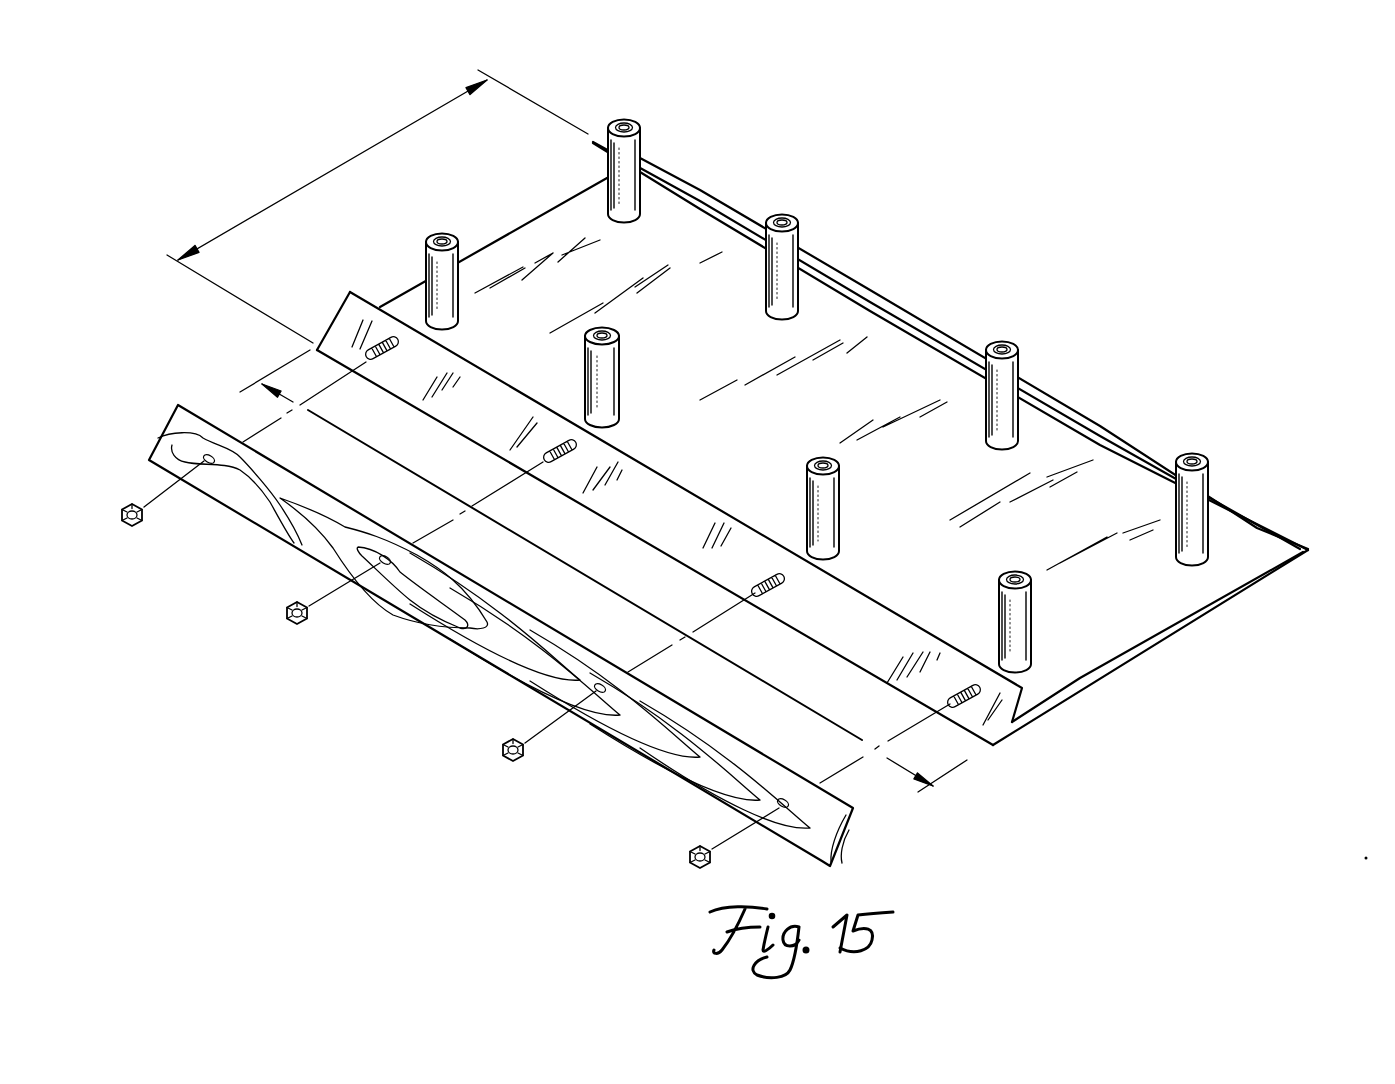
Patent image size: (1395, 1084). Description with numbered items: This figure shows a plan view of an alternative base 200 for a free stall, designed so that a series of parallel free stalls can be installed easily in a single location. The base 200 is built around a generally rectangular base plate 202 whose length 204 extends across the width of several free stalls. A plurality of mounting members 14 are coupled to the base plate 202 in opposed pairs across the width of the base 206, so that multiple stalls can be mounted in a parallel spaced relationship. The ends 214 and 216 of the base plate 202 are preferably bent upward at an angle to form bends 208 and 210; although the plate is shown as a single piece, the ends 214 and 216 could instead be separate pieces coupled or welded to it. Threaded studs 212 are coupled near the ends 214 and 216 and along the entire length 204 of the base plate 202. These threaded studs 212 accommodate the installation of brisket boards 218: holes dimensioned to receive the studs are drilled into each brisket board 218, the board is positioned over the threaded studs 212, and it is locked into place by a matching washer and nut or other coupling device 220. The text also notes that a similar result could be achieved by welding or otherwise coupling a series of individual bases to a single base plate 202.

The mounting member 14 is at (1210, 477).
The base 200 is at (900, 280).
The base plate 202 is at (1197, 627).
The length 204 is at (612, 597).
The width of the base 206 is at (337, 165).
The bend 208 is at (995, 745).
The bend 210 is at (1312, 550).
The threaded stud 212 is at (378, 343).
The end of the base plate 214 is at (593, 142).
The end of the base plate 216 is at (1025, 686).
The brisket board 218 is at (845, 868).
The coupling device 220 is at (138, 520).